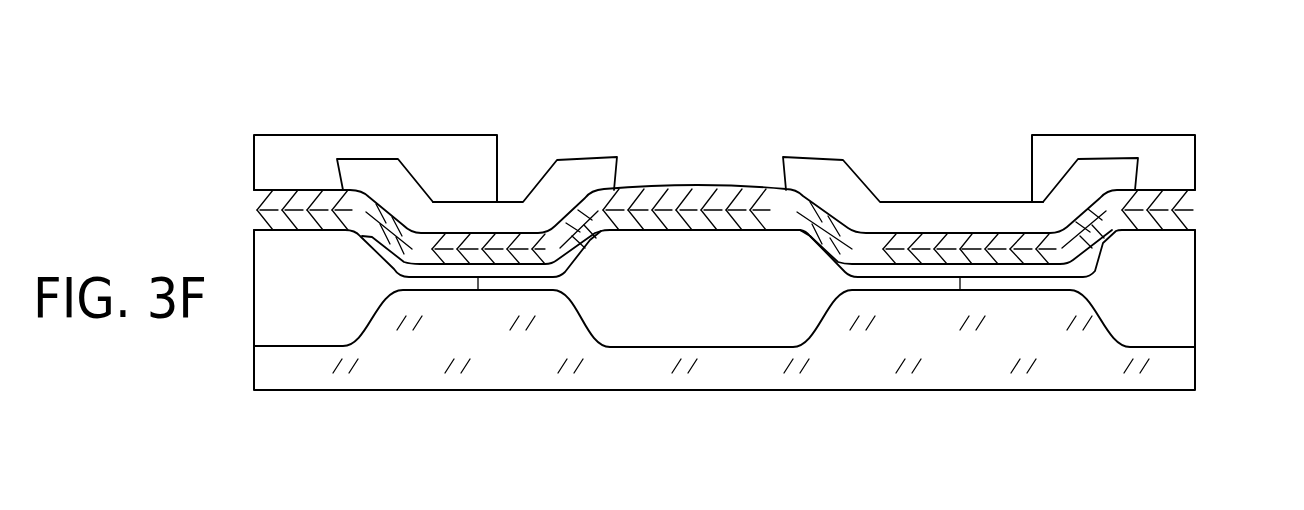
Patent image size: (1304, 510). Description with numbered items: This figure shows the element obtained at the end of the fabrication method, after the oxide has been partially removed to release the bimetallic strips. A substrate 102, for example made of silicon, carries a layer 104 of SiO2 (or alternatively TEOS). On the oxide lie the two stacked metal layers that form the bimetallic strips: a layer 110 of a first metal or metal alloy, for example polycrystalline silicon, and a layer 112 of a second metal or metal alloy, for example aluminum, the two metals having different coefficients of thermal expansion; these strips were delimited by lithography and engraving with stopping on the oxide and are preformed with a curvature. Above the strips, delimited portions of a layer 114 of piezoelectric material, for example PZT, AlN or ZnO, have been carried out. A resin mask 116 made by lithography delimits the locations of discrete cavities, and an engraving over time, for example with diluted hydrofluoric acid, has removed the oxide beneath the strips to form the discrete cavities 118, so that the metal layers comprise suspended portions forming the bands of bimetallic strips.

The substrate 102 is at (1177, 367).
The layer of SiO2 104 is at (1177, 288).
The layer of a first metal or metal alloy 110 is at (1180, 218).
The layer of a second metal or metal alloy 112 is at (699, 198).
The layer of piezoelectric material 114 is at (552, 193).
The resin mask 116 is at (375, 147).
The discrete cavities 118 is at (670, 317).